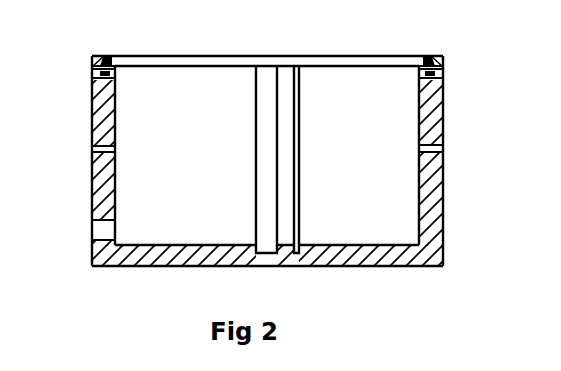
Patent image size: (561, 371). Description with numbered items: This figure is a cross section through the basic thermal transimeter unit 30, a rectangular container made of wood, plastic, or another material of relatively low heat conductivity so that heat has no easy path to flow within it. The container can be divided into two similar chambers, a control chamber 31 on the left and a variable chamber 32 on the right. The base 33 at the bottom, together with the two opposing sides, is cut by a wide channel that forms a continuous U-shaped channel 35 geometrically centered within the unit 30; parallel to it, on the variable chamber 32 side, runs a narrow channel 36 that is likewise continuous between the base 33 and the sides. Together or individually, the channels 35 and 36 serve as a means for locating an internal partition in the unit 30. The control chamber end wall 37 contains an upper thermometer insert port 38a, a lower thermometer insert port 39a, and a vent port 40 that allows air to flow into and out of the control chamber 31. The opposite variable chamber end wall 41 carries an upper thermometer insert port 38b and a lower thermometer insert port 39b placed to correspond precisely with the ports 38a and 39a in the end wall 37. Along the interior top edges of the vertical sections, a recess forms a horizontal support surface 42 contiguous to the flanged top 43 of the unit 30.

The basic thermal transimeter unit 30 is at (233, 273).
The control chamber 31 is at (192, 170).
The variable chamber 32 is at (345, 160).
The base 33 is at (322, 255).
The wide channel 35 is at (268, 252).
The narrow channel 36 is at (300, 252).
The control chamber end wall 37 is at (102, 175).
The upper thermometer insert port 38a is at (98, 72).
The upper thermometer insert port 38b is at (435, 73).
The lower thermometer insert port 39a is at (100, 148).
The lower thermometer insert port 39b is at (435, 144).
The vent port 40 is at (100, 230).
The variable chamber end wall 41 is at (430, 188).
The horizontal support surface 42 is at (428, 60).
The flanged top 43 is at (437, 57).